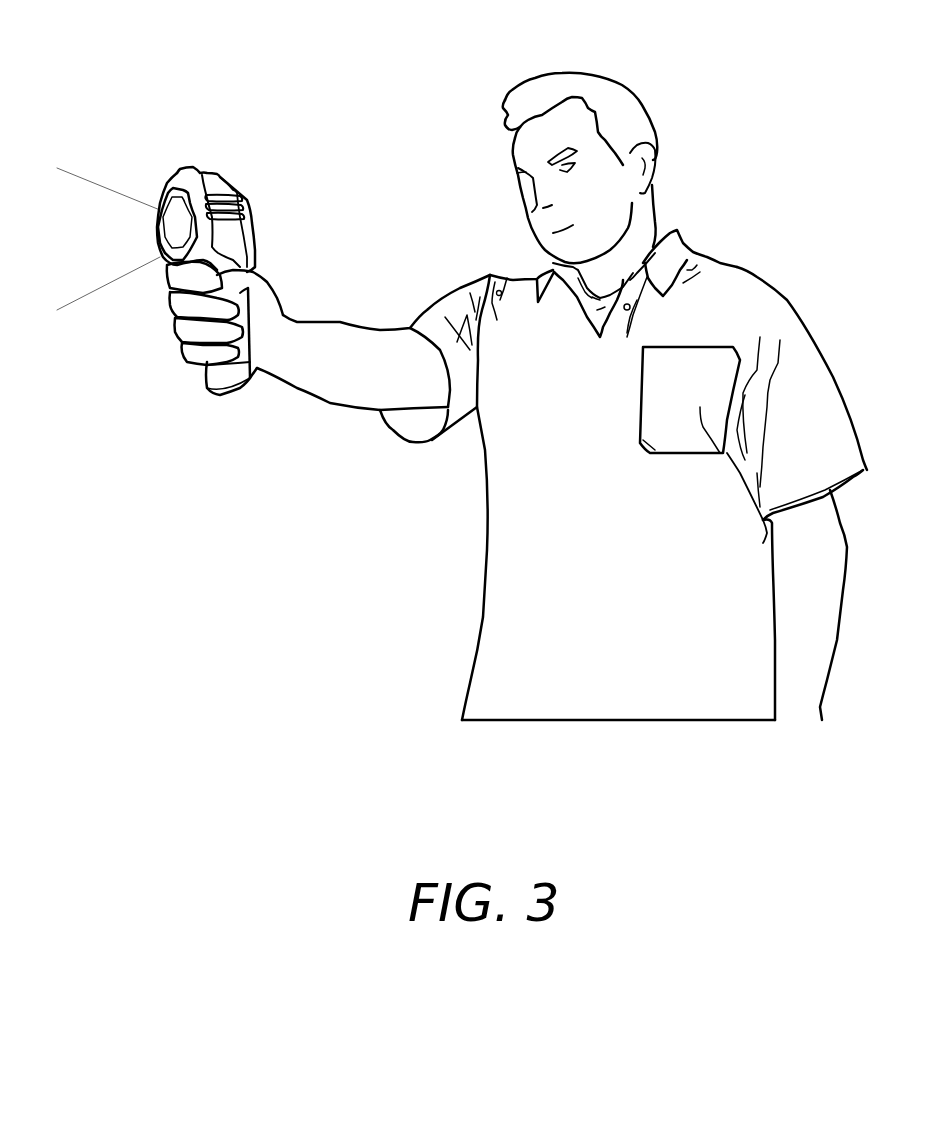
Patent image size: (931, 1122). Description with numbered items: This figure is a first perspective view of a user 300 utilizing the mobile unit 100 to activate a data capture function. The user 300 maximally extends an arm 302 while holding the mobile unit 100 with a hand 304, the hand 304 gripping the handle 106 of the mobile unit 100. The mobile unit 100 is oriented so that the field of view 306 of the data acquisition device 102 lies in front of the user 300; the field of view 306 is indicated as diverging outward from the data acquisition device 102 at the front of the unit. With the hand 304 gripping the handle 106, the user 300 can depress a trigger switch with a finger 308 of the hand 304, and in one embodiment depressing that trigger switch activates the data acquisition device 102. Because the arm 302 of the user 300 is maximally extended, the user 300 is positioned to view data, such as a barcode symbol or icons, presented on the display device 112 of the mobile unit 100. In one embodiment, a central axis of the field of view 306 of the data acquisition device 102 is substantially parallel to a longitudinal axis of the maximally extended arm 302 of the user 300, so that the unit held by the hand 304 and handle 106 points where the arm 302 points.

The user 300 is at (478, 59).
The mobile unit 100 is at (217, 173).
The data acquisition device 102 is at (173, 210).
The display device 112 is at (250, 197).
The handle 106 is at (203, 388).
The arm 302 is at (353, 320).
The hand 304 is at (260, 277).
The field of view 306 is at (115, 256).
The finger 308 is at (160, 278).